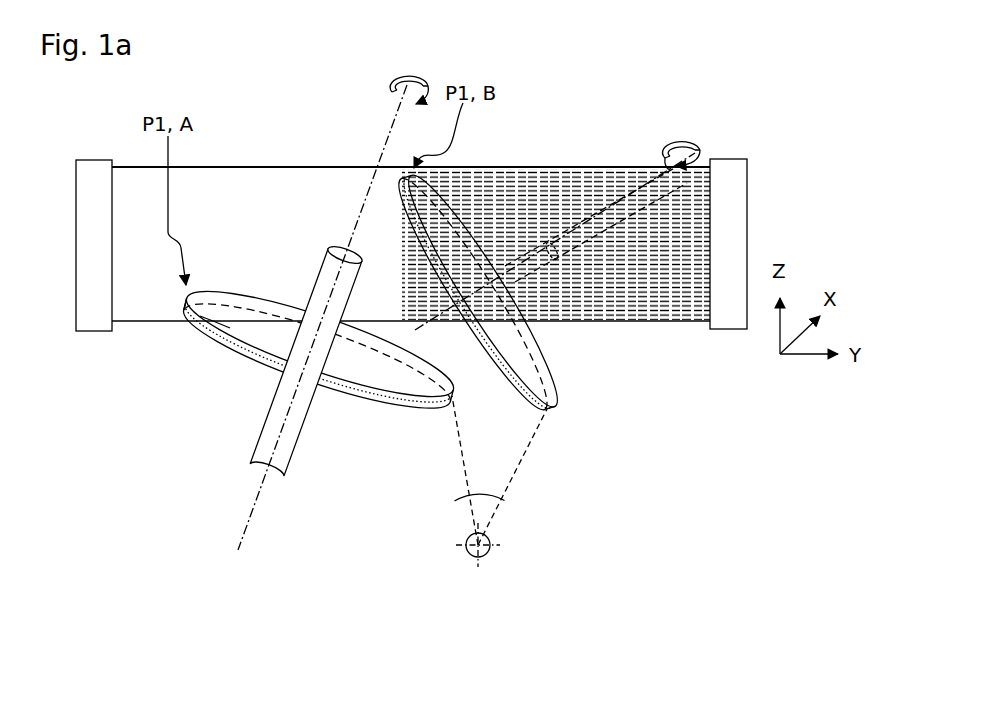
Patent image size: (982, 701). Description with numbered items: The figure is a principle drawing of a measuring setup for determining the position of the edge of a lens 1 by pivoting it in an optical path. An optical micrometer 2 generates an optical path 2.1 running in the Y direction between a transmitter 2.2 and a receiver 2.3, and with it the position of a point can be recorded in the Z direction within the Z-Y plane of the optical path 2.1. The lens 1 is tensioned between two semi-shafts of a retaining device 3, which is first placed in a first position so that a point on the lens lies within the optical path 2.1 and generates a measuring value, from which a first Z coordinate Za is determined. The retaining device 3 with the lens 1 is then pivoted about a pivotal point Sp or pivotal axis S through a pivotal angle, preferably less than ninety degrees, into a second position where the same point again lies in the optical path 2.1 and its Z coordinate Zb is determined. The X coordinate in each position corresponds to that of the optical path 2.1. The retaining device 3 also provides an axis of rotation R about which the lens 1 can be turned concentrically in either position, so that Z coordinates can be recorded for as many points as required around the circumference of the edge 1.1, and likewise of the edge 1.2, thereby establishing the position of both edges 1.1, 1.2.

The lens 1 is at (370, 372).
The edge 1.1 is at (202, 333).
The edge 1.2 is at (227, 340).
The optical micrometer 2 is at (665, 355).
The optical path 2.1 is at (618, 303).
The transmitter 2.2 is at (730, 320).
The receiver 2.3 is at (85, 322).
The retaining device 3 is at (250, 455).
The axis of rotation R is at (390, 94).
The first Z coordinate Za is at (100, 301).
The Z coordinate Zb is at (100, 177).
The pivotal axis S is at (468, 538).
The pivotal point Sp is at (497, 562).